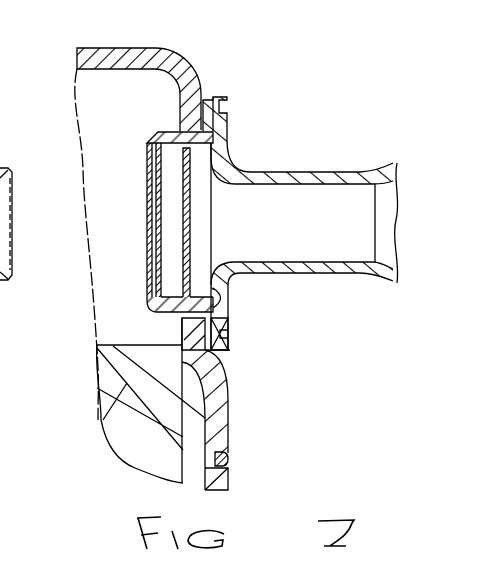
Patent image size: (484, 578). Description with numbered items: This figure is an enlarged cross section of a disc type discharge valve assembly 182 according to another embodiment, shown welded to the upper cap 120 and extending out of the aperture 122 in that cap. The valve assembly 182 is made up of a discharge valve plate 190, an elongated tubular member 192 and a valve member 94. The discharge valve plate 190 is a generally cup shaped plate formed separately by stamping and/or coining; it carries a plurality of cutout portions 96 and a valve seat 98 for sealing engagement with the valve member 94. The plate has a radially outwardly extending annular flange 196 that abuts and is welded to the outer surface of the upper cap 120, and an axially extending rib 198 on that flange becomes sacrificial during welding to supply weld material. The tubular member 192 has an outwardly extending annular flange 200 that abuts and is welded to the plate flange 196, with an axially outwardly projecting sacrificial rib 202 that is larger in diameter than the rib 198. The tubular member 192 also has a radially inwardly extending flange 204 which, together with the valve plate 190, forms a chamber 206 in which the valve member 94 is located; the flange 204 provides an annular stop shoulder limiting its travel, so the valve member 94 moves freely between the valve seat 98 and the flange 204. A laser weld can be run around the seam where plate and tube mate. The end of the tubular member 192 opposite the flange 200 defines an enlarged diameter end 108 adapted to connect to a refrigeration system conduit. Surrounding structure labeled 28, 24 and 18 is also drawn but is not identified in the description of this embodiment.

The upper cap 120 is at (107, 60).
The housing 28 is at (140, 116).
The discharge valve assembly 182 is at (350, 36).
The annular flange 200 is at (222, 96).
The radially inwardly extending flange 204 is at (224, 168).
The discharge valve plate 190 is at (150, 133).
The chamber 206 is at (194, 182).
The valve member 94 is at (185, 270).
The enlarged diameter end 108 is at (388, 195).
The elongated tubular member 192 is at (323, 274).
The valve seat 98 is at (165, 262).
The cutout portions 96 is at (155, 272).
The axially extending rib 198 is at (182, 332).
The annular flange 196 is at (98, 347).
The mounting flange 24 is at (101, 420).
The aperture 122 is at (223, 312).
The axially outwardly projecting rib 202 is at (230, 335).
The gasket 18 is at (228, 479).